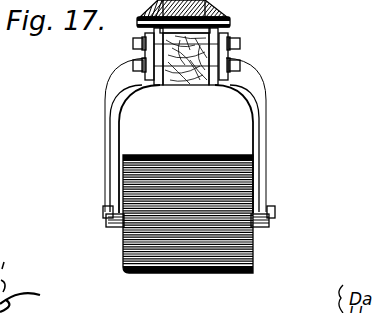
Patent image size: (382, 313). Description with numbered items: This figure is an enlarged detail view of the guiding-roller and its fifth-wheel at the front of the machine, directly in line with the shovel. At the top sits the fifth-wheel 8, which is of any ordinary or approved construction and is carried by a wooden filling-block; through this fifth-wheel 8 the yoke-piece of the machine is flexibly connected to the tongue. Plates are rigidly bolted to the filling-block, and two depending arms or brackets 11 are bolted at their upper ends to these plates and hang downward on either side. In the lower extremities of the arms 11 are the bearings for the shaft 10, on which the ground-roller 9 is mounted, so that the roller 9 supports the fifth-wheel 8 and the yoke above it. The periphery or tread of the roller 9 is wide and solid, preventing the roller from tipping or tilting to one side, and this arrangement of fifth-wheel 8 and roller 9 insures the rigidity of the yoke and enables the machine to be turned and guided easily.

The fifth-wheel 8 is at (230, 20).
The depending arms or brackets 11 is at (107, 128).
The ground-roller 9 is at (188, 214).
The shaft 10 is at (104, 216).